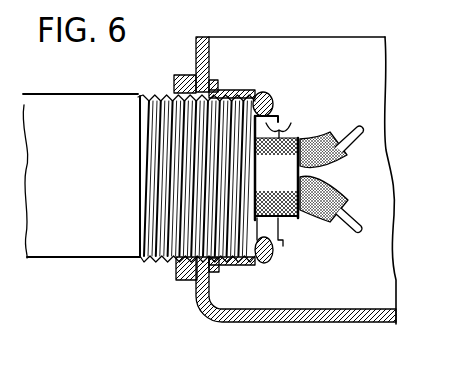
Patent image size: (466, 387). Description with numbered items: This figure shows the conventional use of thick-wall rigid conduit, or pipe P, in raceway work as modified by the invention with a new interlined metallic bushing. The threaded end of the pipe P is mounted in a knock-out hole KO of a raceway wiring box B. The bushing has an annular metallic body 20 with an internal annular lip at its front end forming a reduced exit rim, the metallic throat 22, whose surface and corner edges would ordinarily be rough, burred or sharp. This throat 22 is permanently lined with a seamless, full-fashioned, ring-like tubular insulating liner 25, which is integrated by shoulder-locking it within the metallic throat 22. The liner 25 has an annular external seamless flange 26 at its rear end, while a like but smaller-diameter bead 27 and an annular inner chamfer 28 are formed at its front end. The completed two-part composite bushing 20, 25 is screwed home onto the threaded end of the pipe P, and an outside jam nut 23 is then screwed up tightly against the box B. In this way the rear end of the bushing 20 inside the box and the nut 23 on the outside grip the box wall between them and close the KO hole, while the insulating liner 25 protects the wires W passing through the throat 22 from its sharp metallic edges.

The metallic body 20 is at (240, 265).
The metallic throat 22 is at (265, 264).
The jam nut 23 is at (180, 268).
The tubular insulating liner 25 is at (280, 128).
The annular external seamless flange 26 is at (270, 98).
The bead 27 is at (268, 112).
The annular inner chamfer 28 is at (280, 228).
The raceway wiring box B is at (377, 163).
The wires W is at (335, 179).
The rigid conduit (pipe) P is at (50, 243).
The knock-out hole KO is at (201, 288).